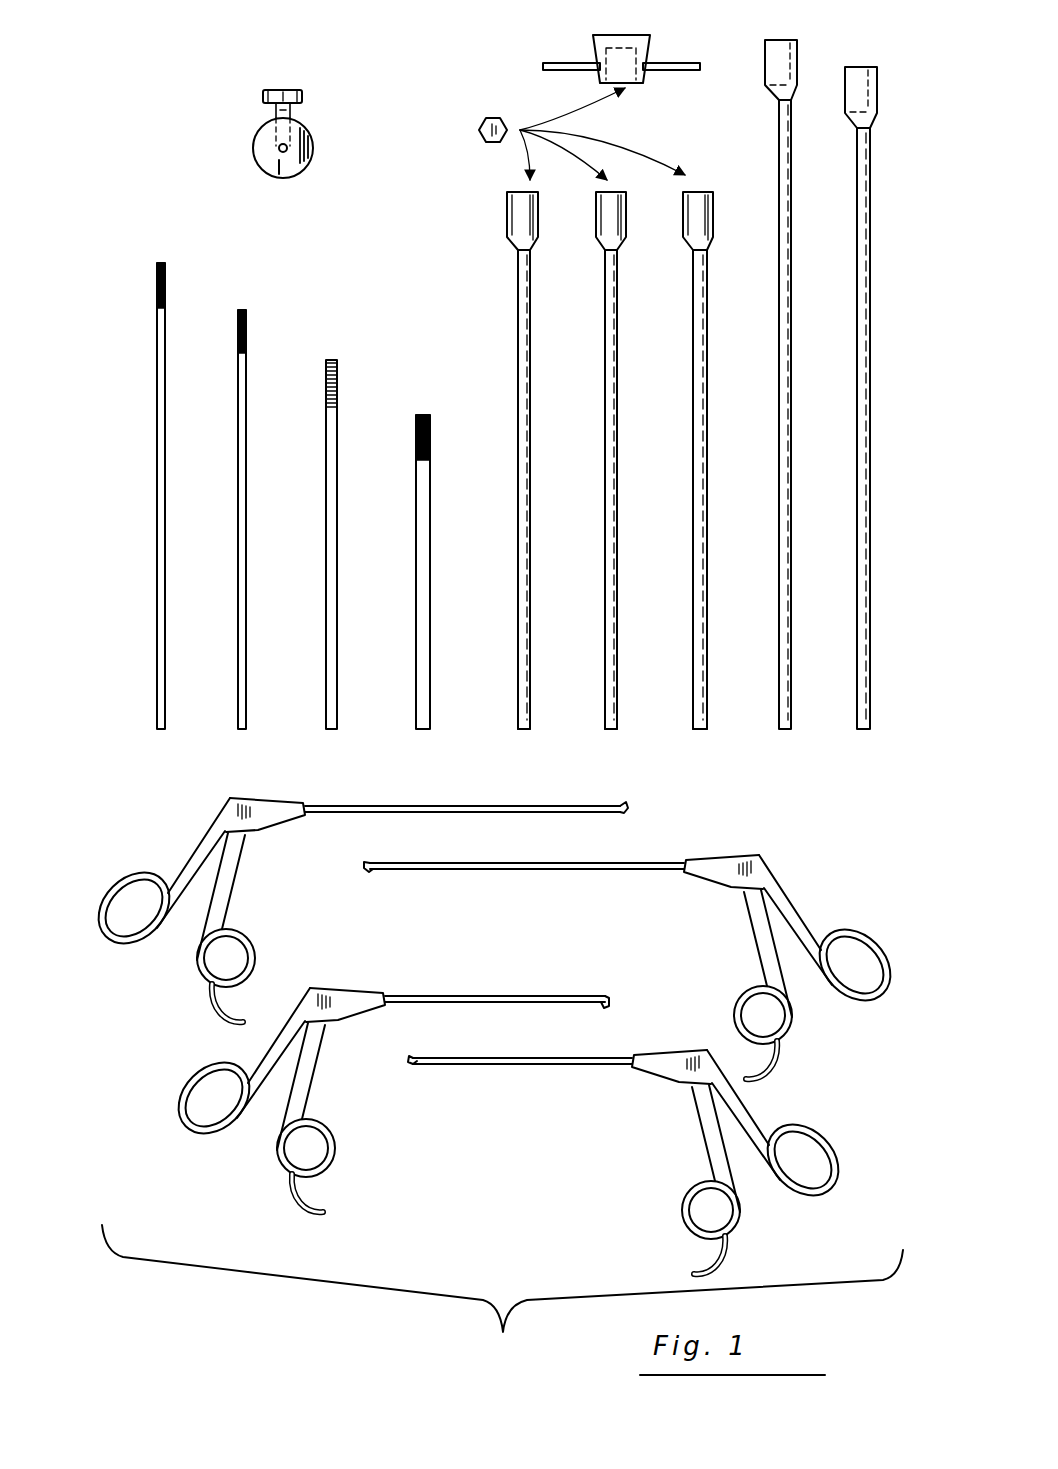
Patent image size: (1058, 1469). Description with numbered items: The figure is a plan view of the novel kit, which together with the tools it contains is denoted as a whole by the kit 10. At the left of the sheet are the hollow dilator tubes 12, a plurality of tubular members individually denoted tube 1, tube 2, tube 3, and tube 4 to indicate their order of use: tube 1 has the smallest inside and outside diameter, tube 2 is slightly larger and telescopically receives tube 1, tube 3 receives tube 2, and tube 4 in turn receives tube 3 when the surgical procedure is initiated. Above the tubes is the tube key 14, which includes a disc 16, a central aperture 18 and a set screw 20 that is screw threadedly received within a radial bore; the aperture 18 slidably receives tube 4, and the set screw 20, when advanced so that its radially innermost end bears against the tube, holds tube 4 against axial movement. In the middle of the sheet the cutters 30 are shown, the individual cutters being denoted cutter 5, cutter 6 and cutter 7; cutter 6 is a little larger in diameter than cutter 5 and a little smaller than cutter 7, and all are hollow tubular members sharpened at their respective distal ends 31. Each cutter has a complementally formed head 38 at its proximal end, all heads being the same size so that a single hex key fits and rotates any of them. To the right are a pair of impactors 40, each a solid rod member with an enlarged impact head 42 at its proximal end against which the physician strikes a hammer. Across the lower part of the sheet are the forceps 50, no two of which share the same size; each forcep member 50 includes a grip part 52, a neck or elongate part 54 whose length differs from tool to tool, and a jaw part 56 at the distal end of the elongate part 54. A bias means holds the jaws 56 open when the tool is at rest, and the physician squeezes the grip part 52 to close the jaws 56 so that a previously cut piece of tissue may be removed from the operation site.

The kit 10 is at (845, 25).
The dilator tubes 12 is at (148, 268).
The tube 1 is at (158, 447).
The tube 2 is at (240, 492).
The tube 3 is at (327, 512).
The tube 4 is at (417, 548).
The tube key 14 is at (205, 100).
The disc 16 is at (310, 140).
The central aperture 18 is at (280, 150).
The set screw 20 is at (285, 92).
The cutters 30 is at (500, 268).
The cutter 5 is at (517, 370).
The cutter 6 is at (605, 413).
The cutter 7 is at (692, 434).
The distal ends 31 is at (530, 718).
The head 38 is at (507, 212).
The impactors 40 is at (780, 300).
The impact head 42 is at (770, 48).
The forceps 50 is at (172, 787).
The grip part 52 is at (140, 862).
The elongate part 54 is at (455, 805).
The jaw part 56 is at (622, 797).